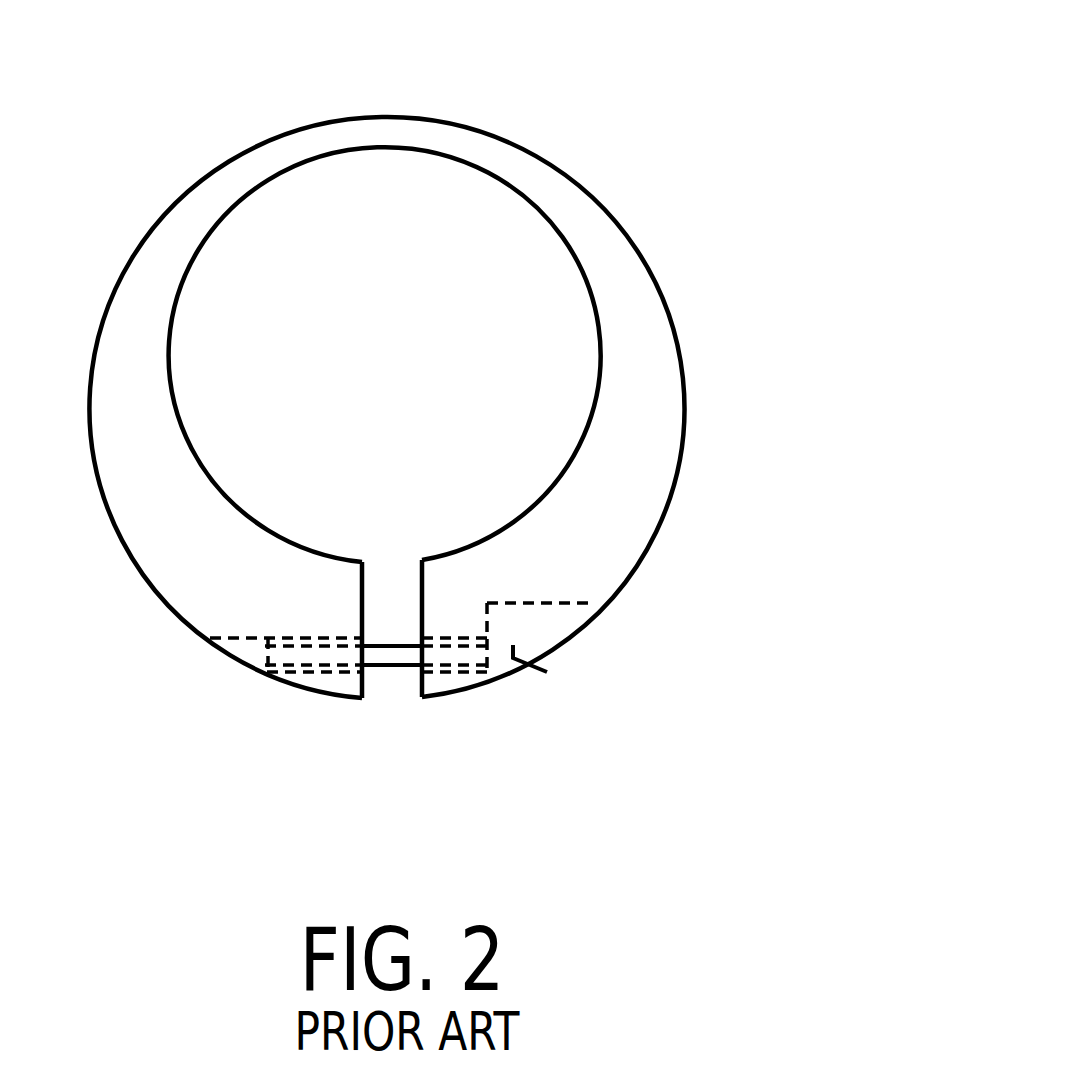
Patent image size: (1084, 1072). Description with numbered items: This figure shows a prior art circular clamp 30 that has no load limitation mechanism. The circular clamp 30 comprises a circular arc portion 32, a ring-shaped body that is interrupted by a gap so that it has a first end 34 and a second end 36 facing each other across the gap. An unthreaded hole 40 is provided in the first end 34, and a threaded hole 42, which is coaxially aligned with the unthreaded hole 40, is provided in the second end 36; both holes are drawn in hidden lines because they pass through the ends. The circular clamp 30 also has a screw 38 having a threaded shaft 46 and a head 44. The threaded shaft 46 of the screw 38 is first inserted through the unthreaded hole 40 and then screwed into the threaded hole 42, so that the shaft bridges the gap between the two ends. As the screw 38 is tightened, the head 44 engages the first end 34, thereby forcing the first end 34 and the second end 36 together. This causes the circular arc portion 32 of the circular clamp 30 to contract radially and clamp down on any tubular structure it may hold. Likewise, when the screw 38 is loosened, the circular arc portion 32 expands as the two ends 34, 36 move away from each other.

The circular clamp 30 is at (515, 411).
The circular arc portion 32 is at (482, 133).
The first end 34 is at (440, 697).
The second end 36 is at (302, 690).
The screw 38 is at (513, 646).
The unthreaded hole 40 is at (452, 638).
The threaded hole 42 is at (283, 638).
The head 44 is at (493, 623).
The threaded shaft 46 is at (395, 668).